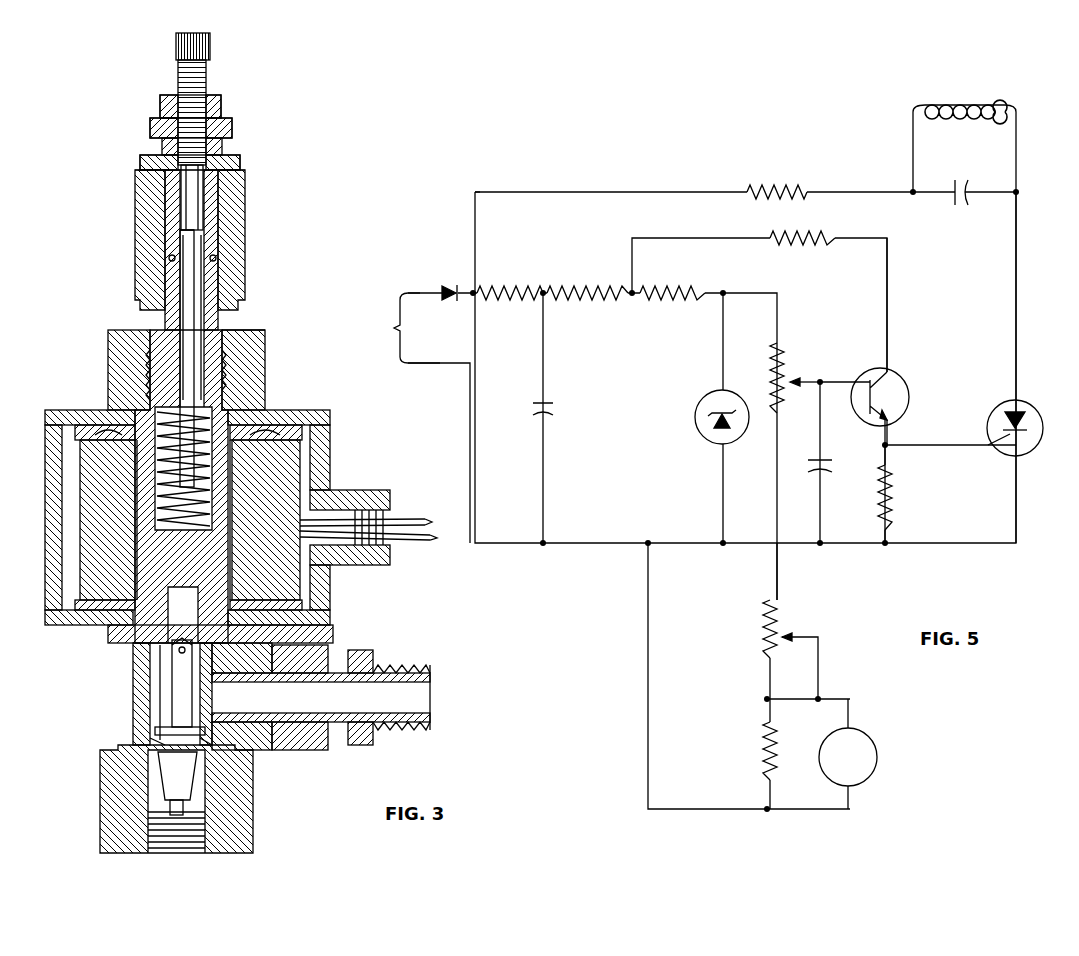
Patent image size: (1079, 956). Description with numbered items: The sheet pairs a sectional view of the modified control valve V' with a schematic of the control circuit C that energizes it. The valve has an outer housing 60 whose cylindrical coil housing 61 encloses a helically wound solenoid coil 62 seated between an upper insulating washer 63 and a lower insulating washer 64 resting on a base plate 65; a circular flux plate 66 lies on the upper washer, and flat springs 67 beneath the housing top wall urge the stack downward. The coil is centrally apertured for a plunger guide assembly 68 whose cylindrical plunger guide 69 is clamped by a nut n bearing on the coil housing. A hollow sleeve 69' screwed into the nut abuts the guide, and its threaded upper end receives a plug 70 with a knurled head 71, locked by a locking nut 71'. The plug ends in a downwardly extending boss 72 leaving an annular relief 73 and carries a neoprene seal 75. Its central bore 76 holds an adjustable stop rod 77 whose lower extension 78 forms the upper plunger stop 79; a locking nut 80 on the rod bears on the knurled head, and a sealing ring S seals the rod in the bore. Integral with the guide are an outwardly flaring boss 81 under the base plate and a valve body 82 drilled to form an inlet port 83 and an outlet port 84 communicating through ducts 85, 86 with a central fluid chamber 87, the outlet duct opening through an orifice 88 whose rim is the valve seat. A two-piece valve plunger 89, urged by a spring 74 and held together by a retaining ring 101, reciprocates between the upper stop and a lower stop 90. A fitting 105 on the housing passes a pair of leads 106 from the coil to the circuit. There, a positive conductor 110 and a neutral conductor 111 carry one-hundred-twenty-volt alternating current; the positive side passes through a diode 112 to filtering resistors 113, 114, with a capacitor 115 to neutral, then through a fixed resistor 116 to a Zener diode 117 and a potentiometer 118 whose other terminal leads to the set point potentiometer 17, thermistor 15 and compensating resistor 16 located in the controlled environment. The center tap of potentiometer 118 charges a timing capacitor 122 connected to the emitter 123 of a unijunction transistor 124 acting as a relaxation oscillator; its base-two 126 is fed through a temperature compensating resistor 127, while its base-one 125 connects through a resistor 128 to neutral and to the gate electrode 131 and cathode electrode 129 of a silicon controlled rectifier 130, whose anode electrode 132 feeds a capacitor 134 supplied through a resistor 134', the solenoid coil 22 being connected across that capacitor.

In FIG. 3, the adjustable stop rod 77 is at (206, 70).
In FIG. 3, the locking nut 80 is at (221, 102).
In FIG. 3, the knurled head 71 is at (215, 131).
In FIG. 3, the locking nut 71' is at (162, 151).
In FIG. 3, the modified control valve V' is at (241, 145).
In FIG. 3, the hollow sleeve 69' is at (165, 240).
In FIG. 3, the plug 70 is at (210, 275).
In FIG. 3, the central bore 76 is at (200, 305).
In FIG. 3, the annular sealing ring S is at (200, 235).
In FIG. 3, the annular neoprene seal 75 is at (169, 258).
In FIG. 3, the lower extension 78 is at (120, 343).
In FIG. 3, the downwardly extending boss 72 is at (148, 375).
In FIG. 3, the annular clearance 73 is at (148, 390).
In FIG. 3, the nut n is at (265, 356).
In FIG. 3, the cylindrical plunger guide 69 is at (118, 486).
In FIG. 3, the spring 74 is at (200, 502).
In FIG. 3, the upper insulating washer 63 is at (52, 417).
In FIG. 3, the outer control valve housing 60 is at (330, 440).
In FIG. 3, the coil housing 61 is at (320, 588).
In FIG. 3, the base plate 65 is at (330, 628).
In FIG. 3, the solenoid coil 62 is at (285, 475).
In FIG. 3, the circular flux plate 66 is at (300, 425).
In FIG. 3, the flat springs 67 is at (275, 425).
In FIG. 3, the lower insulating washer 64 is at (290, 603).
In FIG. 3, the plunger guide assembly 68 is at (135, 478).
In FIG. 3, the upper plunger stop 79 is at (215, 491).
In FIG. 3, the fitting 105 is at (390, 510).
In FIG. 3, the leads 106 is at (402, 545).
In FIG. 3, the outwardly flaring boss 81 is at (110, 637).
In FIG. 3, the valve body 82 is at (125, 660).
In FIG. 3, the valve plunger assembly 89 is at (155, 680).
In FIG. 3, the retaining ring 101 is at (150, 712).
In FIG. 3, the central fluid chamber 87 is at (155, 730).
In FIG. 3, the lower stop 90 is at (150, 740).
In FIG. 3, the orifice 88 is at (135, 770).
In FIG. 3, the communicating duct 86 is at (140, 800).
In FIG. 3, the outlet port 84 is at (140, 836).
In FIG. 3, the duct 85 is at (233, 700).
In FIG. 3, the inlet port 83 is at (395, 702).
In FIG. 5, the control circuit C is at (712, 172).
In FIG. 5, the solenoid coil 22 is at (945, 105).
In FIG. 5, the resistor 134' is at (804, 187).
In FIG. 5, the capacitor 134 is at (941, 208).
In FIG. 5, the temperature compensating resistor 127 is at (806, 245).
In FIG. 5, the positive conductor 110 is at (422, 290).
In FIG. 5, the diode 112 is at (448, 288).
In FIG. 5, the filtering resistor 113 is at (505, 290).
In FIG. 5, the filtering resistor 114 is at (575, 290).
In FIG. 5, the fixed resistor 116 is at (690, 290).
In FIG. 5, the neutral conductor 111 is at (446, 368).
In FIG. 5, the capacitor 115 is at (552, 403).
In FIG. 5, the Zener diode 117 is at (703, 405).
In FIG. 5, the potentiometer 118 is at (787, 360).
In FIG. 5, the emitter 123 is at (860, 383).
In FIG. 5, the base-2 126 is at (893, 372).
In FIG. 5, the unijunction transistor 124 is at (905, 388).
In FIG. 5, the base-1 125 is at (882, 424).
In FIG. 5, the timing capacitor 122 is at (816, 468).
In FIG. 5, the resistor 128 is at (895, 500).
In FIG. 5, the silicon controlled rectifier 130 is at (1032, 405).
In FIG. 5, the anode electrode 132 is at (1003, 410).
In FIG. 5, the gate electrode 131 is at (1001, 434).
In FIG. 5, the cathode electrode 129 is at (1018, 452).
In FIG. 5, the set point potentiometer 17 is at (785, 615).
In FIG. 5, the compensating resistor 16 is at (762, 762).
In FIG. 5, the thermistor 15 is at (873, 768).